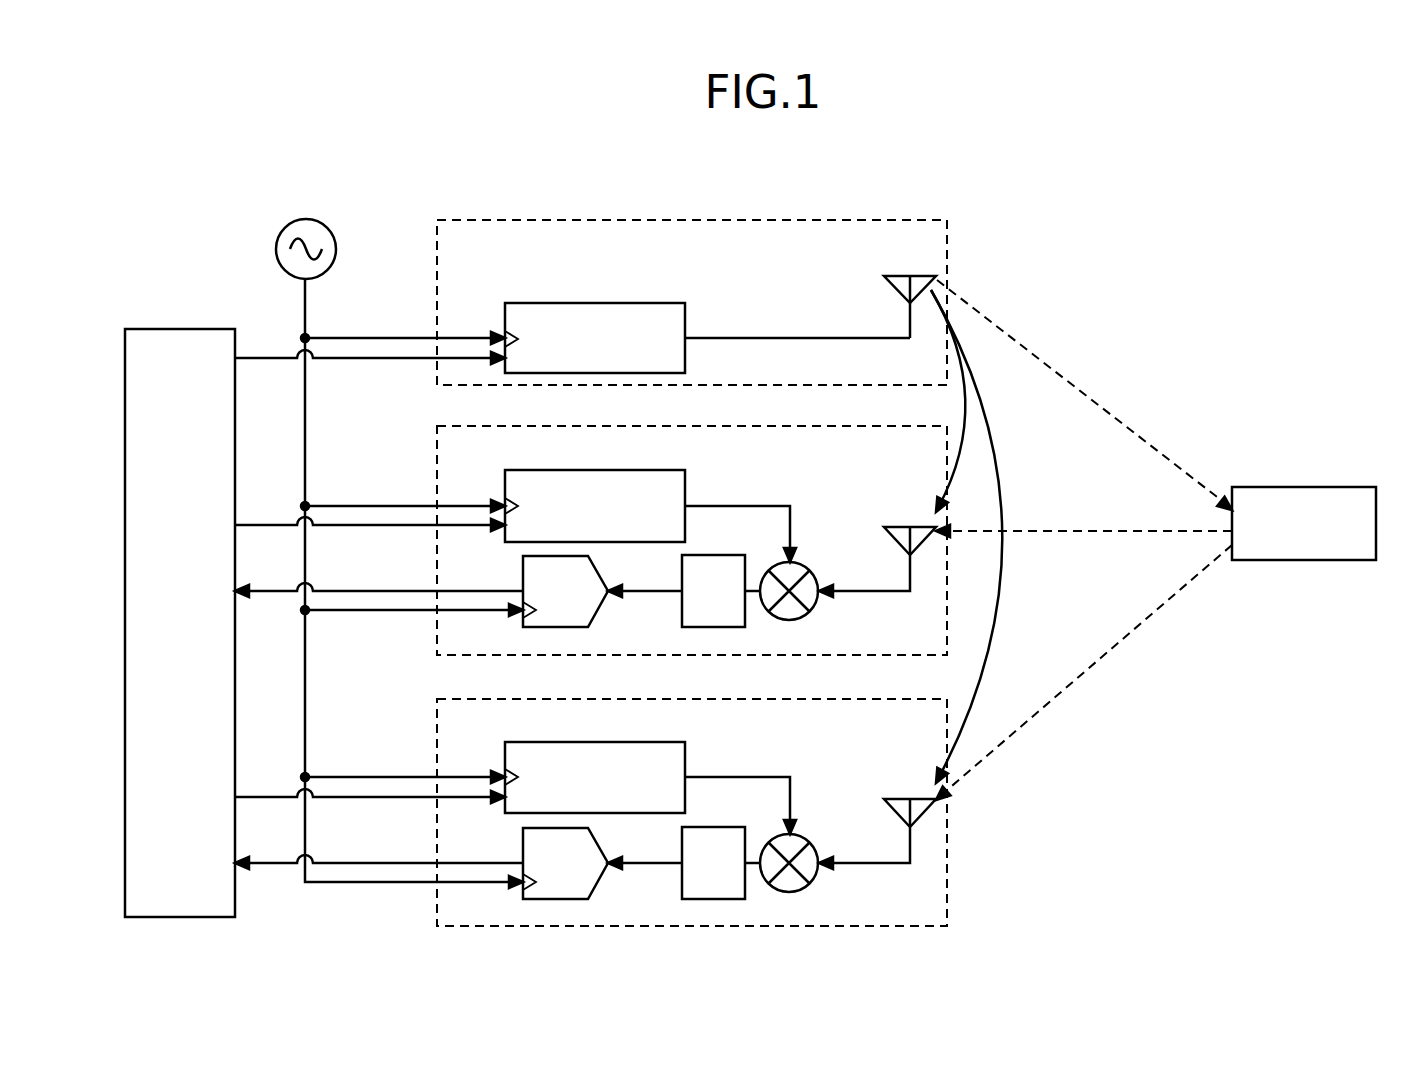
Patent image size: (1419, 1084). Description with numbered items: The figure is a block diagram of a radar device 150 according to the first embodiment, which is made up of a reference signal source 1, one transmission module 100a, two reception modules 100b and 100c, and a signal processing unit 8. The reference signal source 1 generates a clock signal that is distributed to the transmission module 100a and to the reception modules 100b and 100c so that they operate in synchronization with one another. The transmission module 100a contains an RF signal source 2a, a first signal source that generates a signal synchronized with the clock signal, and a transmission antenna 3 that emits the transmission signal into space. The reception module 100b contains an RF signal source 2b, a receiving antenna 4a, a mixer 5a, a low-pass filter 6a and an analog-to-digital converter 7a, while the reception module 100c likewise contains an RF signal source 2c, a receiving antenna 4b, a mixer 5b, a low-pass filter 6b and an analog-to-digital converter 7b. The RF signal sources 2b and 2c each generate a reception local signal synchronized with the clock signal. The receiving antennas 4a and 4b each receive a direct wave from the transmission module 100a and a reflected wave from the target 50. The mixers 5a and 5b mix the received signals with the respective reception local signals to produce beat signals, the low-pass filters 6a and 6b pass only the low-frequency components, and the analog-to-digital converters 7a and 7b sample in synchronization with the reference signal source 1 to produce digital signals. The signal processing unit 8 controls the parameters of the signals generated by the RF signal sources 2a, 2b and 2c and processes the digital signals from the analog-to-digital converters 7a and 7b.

The reference signal source 1 is at (308, 219).
The RF signal source 2a is at (583, 303).
The RF signal source 2b is at (583, 470).
The RF signal source 2c is at (583, 742).
The transmission antenna 3 is at (893, 276).
The receiving antenna 4a is at (893, 527).
The receiving antenna 4b is at (893, 799).
The mixer 5a is at (803, 563).
The mixer 5b is at (803, 835).
The low-pass filter 6a is at (712, 555).
The low-pass filter 6b is at (712, 827).
The analog-to-digital converter 7a is at (596, 564).
The analog-to-digital converter 7b is at (596, 836).
The signal processing unit 8 is at (176, 329).
The target 50 is at (1300, 487).
The transmission module 100a is at (843, 220).
The reception module 100b is at (843, 426).
The reception module 100c is at (843, 699).
The radar device 150 is at (525, 172).